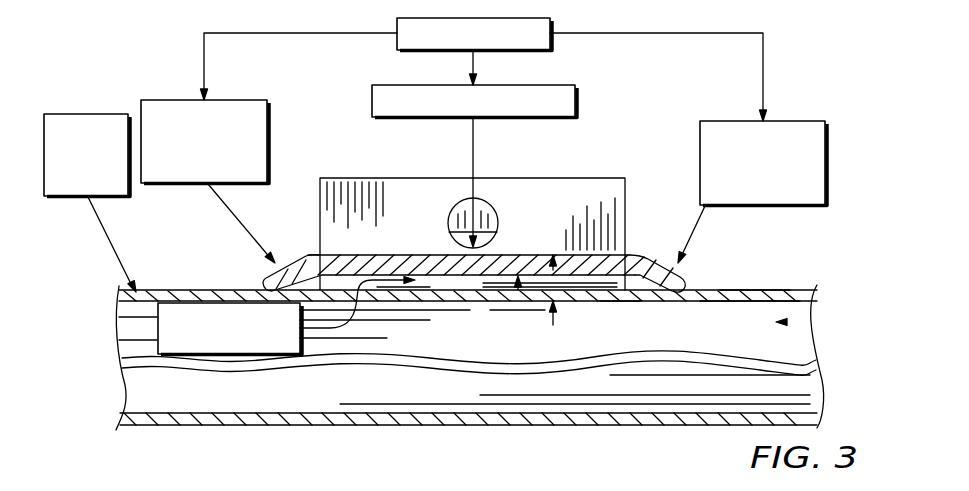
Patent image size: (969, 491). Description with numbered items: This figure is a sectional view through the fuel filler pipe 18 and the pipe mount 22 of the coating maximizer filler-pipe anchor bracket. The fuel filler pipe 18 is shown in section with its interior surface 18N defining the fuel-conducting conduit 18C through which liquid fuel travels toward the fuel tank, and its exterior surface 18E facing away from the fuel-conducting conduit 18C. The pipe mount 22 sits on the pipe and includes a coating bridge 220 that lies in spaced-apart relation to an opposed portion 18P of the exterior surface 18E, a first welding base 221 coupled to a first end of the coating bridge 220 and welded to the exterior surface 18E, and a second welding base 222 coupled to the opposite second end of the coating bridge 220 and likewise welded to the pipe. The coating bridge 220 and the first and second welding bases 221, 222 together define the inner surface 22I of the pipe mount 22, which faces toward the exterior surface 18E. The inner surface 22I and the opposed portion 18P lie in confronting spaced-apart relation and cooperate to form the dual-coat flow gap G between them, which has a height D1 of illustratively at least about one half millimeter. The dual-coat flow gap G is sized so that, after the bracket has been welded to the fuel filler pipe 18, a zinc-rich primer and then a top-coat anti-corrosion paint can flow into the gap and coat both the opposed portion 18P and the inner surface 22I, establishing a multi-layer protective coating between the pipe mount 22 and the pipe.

The pipe mount 22 is at (446, 18).
The coating bridge 220 is at (433, 84).
The first welding base 221 is at (225, 100).
The second welding base 222 is at (746, 121).
The fuel filler pipe 18 is at (93, 113).
The dual-coat flow gap G is at (224, 302).
The opposed portion of exterior surface 18P is at (432, 288).
The height of dual-coat flow gap D1 is at (553, 256).
The inner surface of pipe mount 22I is at (518, 290).
The interior surface of fuel filler pipe 18N is at (623, 302).
The exterior surface of fuel filler pipe 18E is at (748, 289).
The fuel-conducting conduit 18C is at (787, 322).